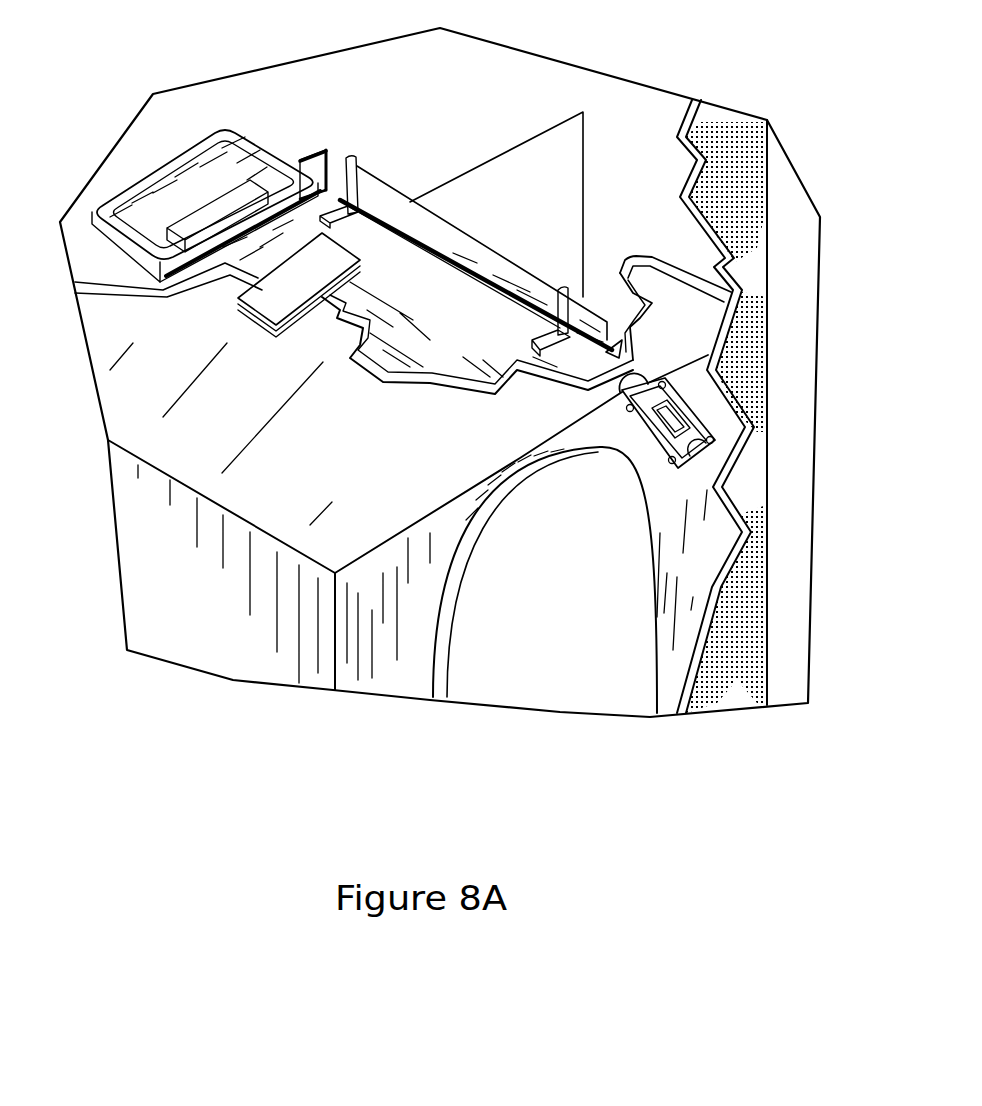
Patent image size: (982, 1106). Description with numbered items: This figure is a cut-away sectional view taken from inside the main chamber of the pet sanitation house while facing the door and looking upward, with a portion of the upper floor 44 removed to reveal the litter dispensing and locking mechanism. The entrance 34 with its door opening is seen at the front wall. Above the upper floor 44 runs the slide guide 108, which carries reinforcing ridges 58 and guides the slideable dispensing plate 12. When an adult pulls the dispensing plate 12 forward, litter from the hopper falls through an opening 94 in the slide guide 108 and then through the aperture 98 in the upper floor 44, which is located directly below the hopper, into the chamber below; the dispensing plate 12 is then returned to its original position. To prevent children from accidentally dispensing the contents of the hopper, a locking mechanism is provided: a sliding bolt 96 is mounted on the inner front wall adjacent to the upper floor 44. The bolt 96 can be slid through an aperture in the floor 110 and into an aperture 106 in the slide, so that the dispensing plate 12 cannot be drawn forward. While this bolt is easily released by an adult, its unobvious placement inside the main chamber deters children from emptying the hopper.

The dispensing plate 12 is at (233, 142).
The entrance 34 is at (560, 637).
The upper floor 44 is at (145, 385).
The reinforcing ridges 58 is at (569, 287).
The opening 94 is at (305, 272).
The sliding bolt 96 is at (716, 441).
The aperture 98 is at (258, 313).
The aperture 106 is at (680, 320).
The slide guide 108 is at (452, 253).
The aperture in the floor 110 is at (620, 392).